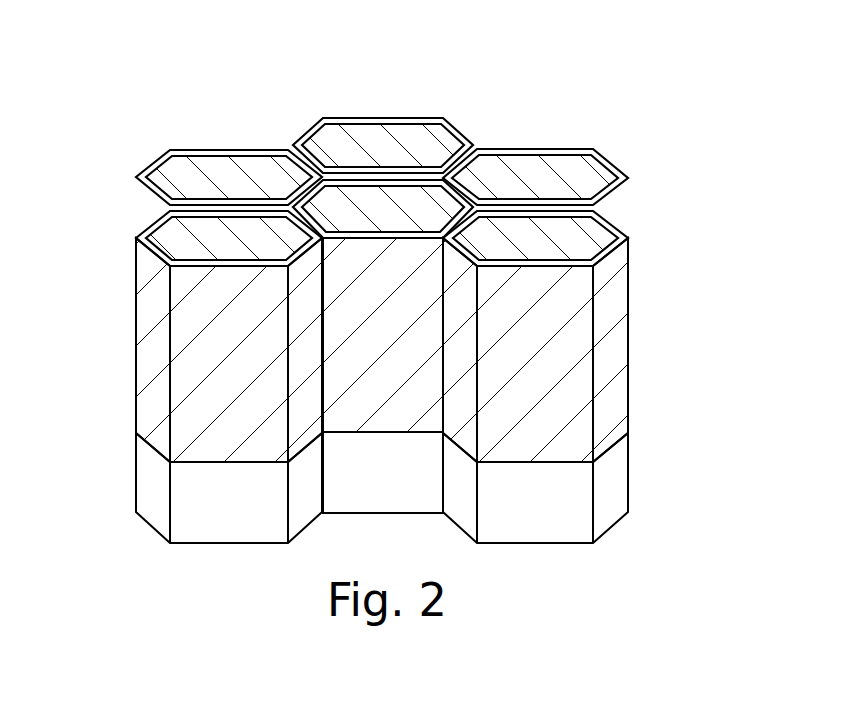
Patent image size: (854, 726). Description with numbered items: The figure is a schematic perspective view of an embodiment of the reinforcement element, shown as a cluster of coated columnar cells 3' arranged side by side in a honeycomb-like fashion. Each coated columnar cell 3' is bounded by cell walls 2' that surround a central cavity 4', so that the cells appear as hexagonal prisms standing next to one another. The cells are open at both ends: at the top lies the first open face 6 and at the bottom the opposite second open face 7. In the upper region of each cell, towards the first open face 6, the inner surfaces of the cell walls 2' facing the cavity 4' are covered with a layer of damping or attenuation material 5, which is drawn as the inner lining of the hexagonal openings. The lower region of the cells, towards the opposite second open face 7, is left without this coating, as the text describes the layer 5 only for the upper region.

The cell walls 2' is at (263, 163).
The coated columnar cells 3' is at (197, 149).
The cavity 4' is at (348, 350).
The layer of damping or attenuation material 5 is at (522, 148).
The first open face 6 is at (568, 242).
The opposite second open face 7 is at (572, 507).